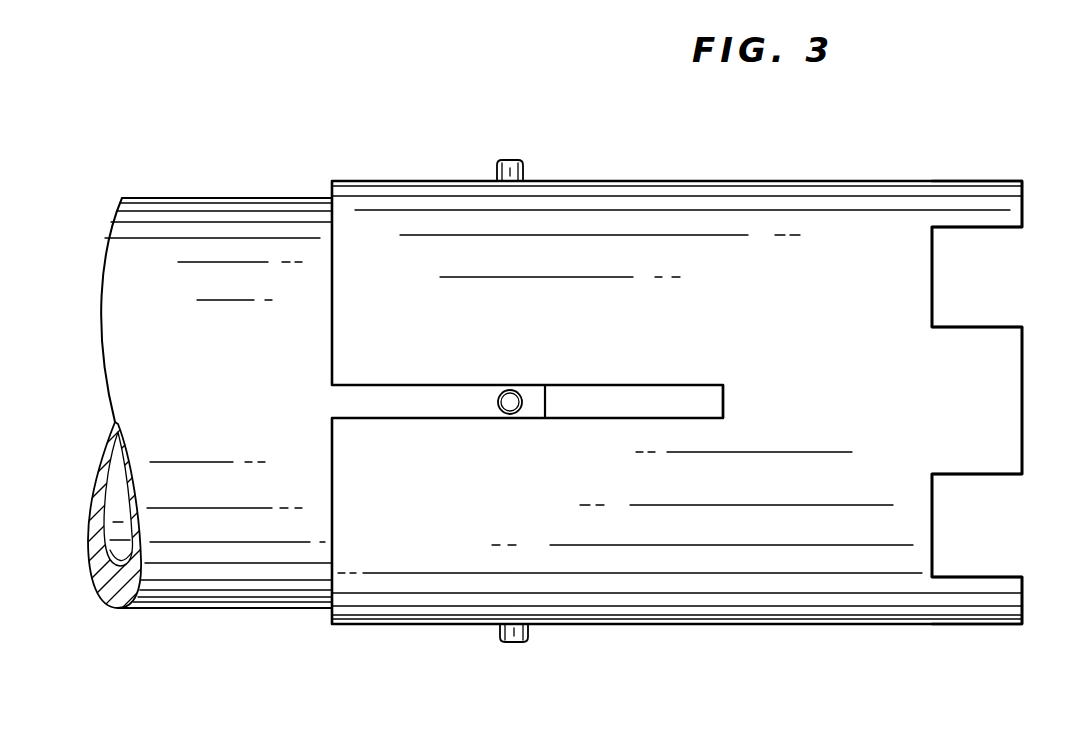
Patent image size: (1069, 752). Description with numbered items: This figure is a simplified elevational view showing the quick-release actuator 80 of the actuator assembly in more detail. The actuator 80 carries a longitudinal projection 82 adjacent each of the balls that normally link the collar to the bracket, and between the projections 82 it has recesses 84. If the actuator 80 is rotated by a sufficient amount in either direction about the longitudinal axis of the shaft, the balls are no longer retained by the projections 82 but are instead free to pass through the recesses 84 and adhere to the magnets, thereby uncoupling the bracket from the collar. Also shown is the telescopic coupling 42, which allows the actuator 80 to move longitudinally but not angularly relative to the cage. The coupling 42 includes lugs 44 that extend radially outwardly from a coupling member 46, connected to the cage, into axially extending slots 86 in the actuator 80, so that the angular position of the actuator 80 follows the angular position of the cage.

The telescopic coupling 42 is at (572, 666).
The lugs 44 is at (525, 176).
The coupling member 46 is at (172, 600).
The quick-release actuator 80 is at (722, 181).
The longitudinal projection 82 is at (1022, 200).
The recesses 84 is at (938, 270).
The axially extending slots 86 is at (612, 392).